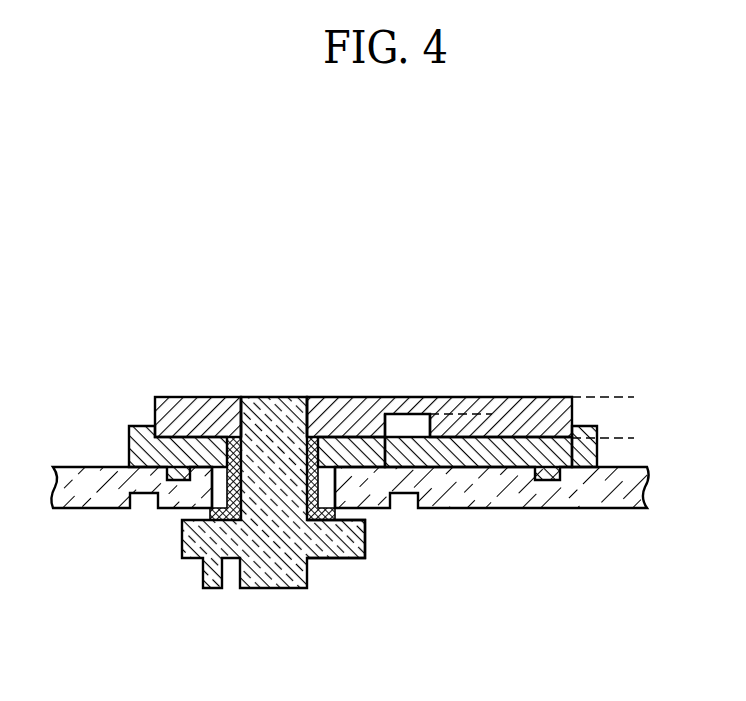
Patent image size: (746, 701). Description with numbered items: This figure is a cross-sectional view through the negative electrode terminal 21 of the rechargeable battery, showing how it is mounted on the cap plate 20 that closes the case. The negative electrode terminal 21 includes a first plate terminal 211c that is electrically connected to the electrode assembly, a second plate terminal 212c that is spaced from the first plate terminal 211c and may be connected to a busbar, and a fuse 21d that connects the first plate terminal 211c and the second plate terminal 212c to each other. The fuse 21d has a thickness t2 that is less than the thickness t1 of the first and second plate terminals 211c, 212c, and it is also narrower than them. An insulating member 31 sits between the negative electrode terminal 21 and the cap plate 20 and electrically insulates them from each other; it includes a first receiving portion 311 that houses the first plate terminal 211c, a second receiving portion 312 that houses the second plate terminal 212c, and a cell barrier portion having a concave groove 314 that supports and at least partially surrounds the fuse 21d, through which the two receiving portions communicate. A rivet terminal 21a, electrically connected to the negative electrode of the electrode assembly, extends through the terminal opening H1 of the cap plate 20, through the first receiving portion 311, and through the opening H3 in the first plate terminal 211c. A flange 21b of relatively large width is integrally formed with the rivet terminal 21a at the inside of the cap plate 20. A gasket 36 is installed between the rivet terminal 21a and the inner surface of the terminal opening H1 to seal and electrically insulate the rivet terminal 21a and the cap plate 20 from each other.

The cap plate 20 is at (613, 486).
The negative electrode terminal 21 is at (330, 479).
The rivet terminal 21a is at (272, 575).
The flange 21b is at (348, 545).
The first plate terminal 211c is at (197, 416).
The second plate terminal 212c is at (533, 415).
The fuse 21d is at (421, 407).
The insulating member 31 is at (346, 403).
The first receiving portion 311 is at (350, 437).
The second receiving portion 312 is at (548, 430).
The concave groove 314 is at (410, 412).
The gasket 36 is at (222, 483).
The terminal opening H1 is at (330, 522).
The opening H3 is at (295, 413).
The thickness of the plate terminals t1 is at (628, 377).
The thickness of the fuse t2 is at (488, 430).